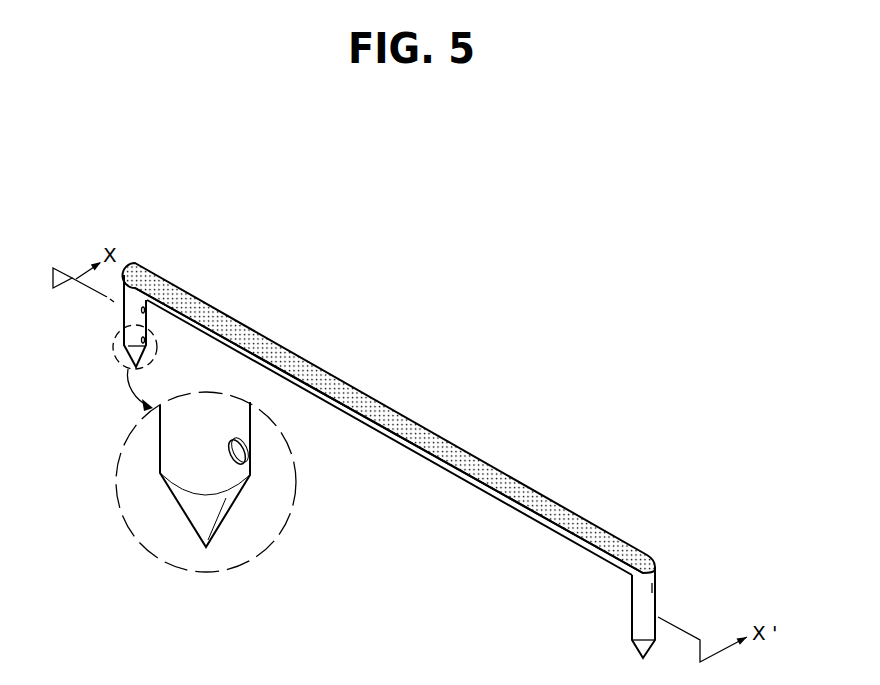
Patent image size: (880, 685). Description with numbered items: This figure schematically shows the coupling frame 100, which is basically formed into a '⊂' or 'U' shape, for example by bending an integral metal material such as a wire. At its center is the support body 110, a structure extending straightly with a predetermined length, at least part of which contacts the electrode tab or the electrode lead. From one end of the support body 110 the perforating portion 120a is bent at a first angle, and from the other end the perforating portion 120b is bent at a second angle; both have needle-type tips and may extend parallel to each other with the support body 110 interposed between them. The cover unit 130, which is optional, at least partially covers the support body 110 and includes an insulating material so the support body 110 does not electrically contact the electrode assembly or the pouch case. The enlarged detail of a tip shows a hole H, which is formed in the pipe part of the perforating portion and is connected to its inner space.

The coupling frame 100 is at (394, 351).
The support body 110 is at (375, 423).
The perforating portion 120a is at (128, 326).
The perforating portion 120b is at (632, 625).
The cover unit 130 is at (425, 435).
The hole H is at (241, 451).